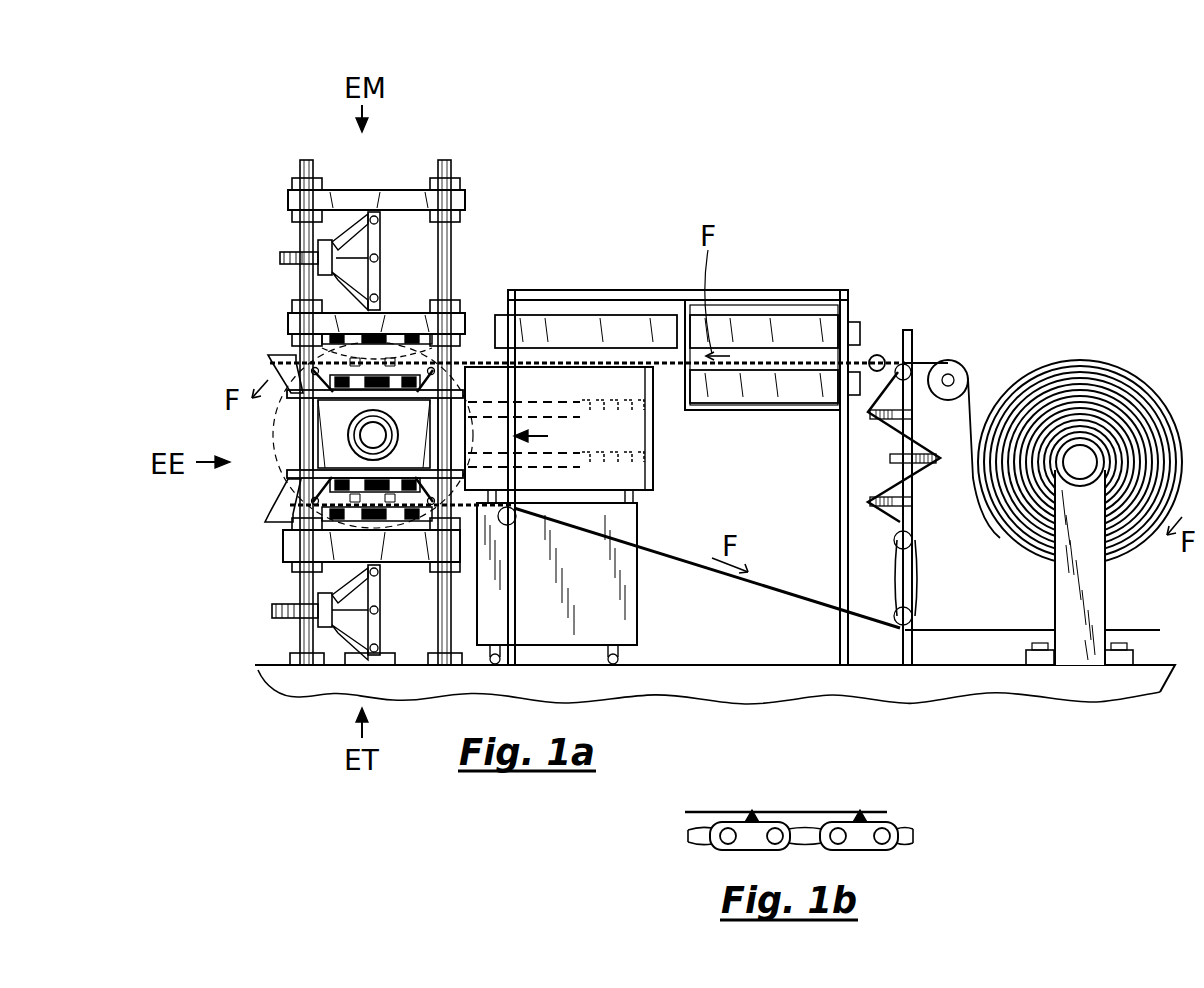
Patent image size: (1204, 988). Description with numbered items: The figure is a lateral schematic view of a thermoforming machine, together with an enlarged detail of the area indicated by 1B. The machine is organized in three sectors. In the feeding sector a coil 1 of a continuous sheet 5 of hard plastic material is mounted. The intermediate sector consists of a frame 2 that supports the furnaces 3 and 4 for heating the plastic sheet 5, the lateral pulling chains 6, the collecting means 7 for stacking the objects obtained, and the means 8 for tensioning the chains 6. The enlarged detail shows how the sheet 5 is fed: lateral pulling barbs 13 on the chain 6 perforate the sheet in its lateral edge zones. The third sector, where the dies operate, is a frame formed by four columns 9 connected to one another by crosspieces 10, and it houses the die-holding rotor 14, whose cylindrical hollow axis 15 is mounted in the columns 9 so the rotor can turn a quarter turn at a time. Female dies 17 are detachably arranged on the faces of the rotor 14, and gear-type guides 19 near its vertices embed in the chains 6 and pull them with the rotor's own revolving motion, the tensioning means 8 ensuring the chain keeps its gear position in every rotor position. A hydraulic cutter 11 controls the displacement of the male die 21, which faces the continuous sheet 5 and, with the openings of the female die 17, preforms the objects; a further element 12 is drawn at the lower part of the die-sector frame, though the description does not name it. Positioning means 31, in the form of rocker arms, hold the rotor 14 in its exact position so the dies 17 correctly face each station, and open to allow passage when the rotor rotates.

In FIG. 1A, the coil 1 is at (1120, 368).
In FIG. 1A, the area indicated by 1B is at (878, 356).
In FIG. 1A, the frame 2 is at (815, 296).
In FIG. 1A, the furnace 3 is at (740, 332).
In FIG. 1A, the furnace 4 is at (775, 382).
In FIG. 1A, the continuous sheet 5 is at (643, 362).
In FIG. 1B, the continuous sheet 5 is at (812, 812).
In FIG. 1A, the lateral pulling chains 6 is at (658, 405).
In FIG. 1B, the lateral pulling chains 6 is at (870, 840).
In FIG. 1A, the collecting means 7 is at (630, 433).
In FIG. 1A, the tensioning means 8 is at (920, 400).
In FIG. 1A, the columns 9 is at (455, 240).
In FIG. 1A, the crosspieces 10 is at (337, 196).
In FIG. 1A, the hydraulic cutter 11 is at (250, 222).
In FIG. 1A, the lower drive pin 12 is at (280, 598).
In FIG. 1B, the lateral pulling barbs 13 is at (750, 815).
In FIG. 1A, the die-holding rotor 14 is at (268, 440).
In FIG. 1A, the axis 15 is at (352, 447).
In FIG. 1A, the female dies 17 is at (388, 372).
In FIG. 1A, the gear-type guides 19 is at (292, 520).
In FIG. 1A, the male die 21 is at (462, 326).
In FIG. 1A, the positioning means 31 is at (300, 383).